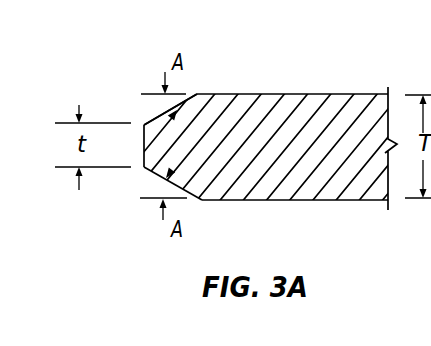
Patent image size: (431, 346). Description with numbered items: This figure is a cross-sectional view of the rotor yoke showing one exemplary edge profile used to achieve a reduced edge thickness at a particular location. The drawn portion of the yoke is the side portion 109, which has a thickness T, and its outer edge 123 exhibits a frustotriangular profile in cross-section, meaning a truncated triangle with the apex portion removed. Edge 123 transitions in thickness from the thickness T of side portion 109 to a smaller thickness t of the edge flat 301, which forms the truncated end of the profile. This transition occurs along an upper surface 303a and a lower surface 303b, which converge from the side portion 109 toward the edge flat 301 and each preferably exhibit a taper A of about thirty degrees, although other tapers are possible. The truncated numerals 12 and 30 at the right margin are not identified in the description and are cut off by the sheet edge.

The side portion 109 is at (277, 94).
The edge 123 is at (141, 105).
The surface 303a is at (157, 116).
The surface 303b is at (163, 165).
The edge flat 301 is at (143, 148).
The truncated numeral (right side) 12 is at (418, 98).
The truncated numeral (right side) 30 is at (418, 206).